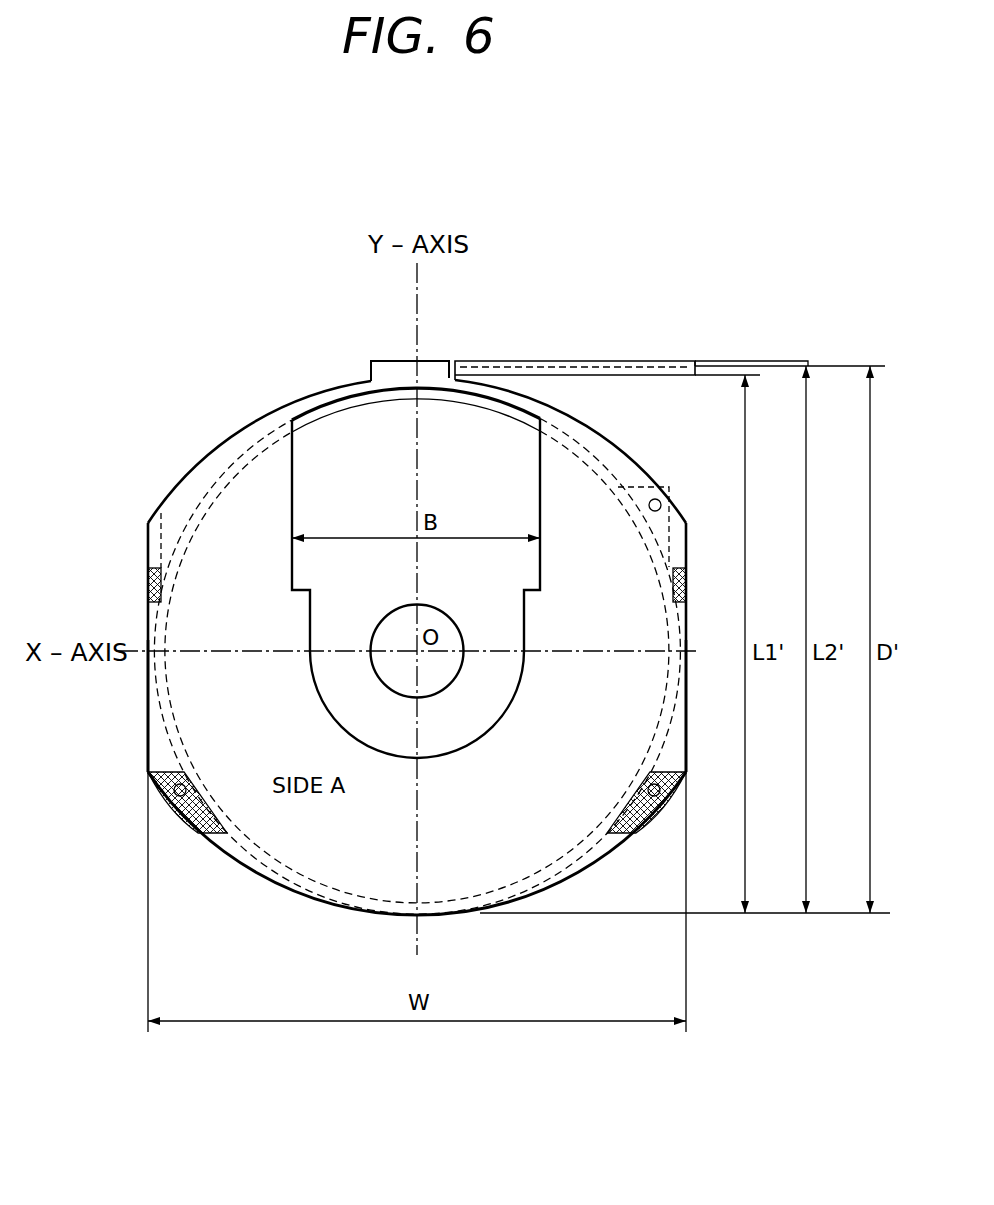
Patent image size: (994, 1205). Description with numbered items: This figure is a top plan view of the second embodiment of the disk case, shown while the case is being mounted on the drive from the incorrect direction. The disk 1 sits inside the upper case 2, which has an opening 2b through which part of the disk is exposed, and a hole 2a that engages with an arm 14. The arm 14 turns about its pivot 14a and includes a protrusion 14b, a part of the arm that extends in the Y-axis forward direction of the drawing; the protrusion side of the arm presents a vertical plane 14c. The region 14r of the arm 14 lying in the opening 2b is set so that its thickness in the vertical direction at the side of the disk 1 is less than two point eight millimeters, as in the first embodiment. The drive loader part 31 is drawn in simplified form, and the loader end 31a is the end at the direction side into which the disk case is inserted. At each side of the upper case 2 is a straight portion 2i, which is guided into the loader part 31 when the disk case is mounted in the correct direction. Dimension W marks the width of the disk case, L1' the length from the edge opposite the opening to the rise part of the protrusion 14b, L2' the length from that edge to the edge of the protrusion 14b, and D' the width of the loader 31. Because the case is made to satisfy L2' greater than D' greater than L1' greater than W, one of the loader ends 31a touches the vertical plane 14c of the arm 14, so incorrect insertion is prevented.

The disk 1 is at (345, 422).
The upper case 2 is at (255, 485).
The hole 2a is at (668, 507).
The opening 2b is at (540, 490).
The straight portion 2i is at (148, 718).
The arm 14 is at (318, 395).
The pivot 14a is at (663, 510).
The protrusion 14b is at (430, 367).
The vertical plane 14c is at (371, 364).
The region 14r is at (512, 395).
The drive loader part 31 is at (848, 366).
The loader end 31a is at (700, 361).